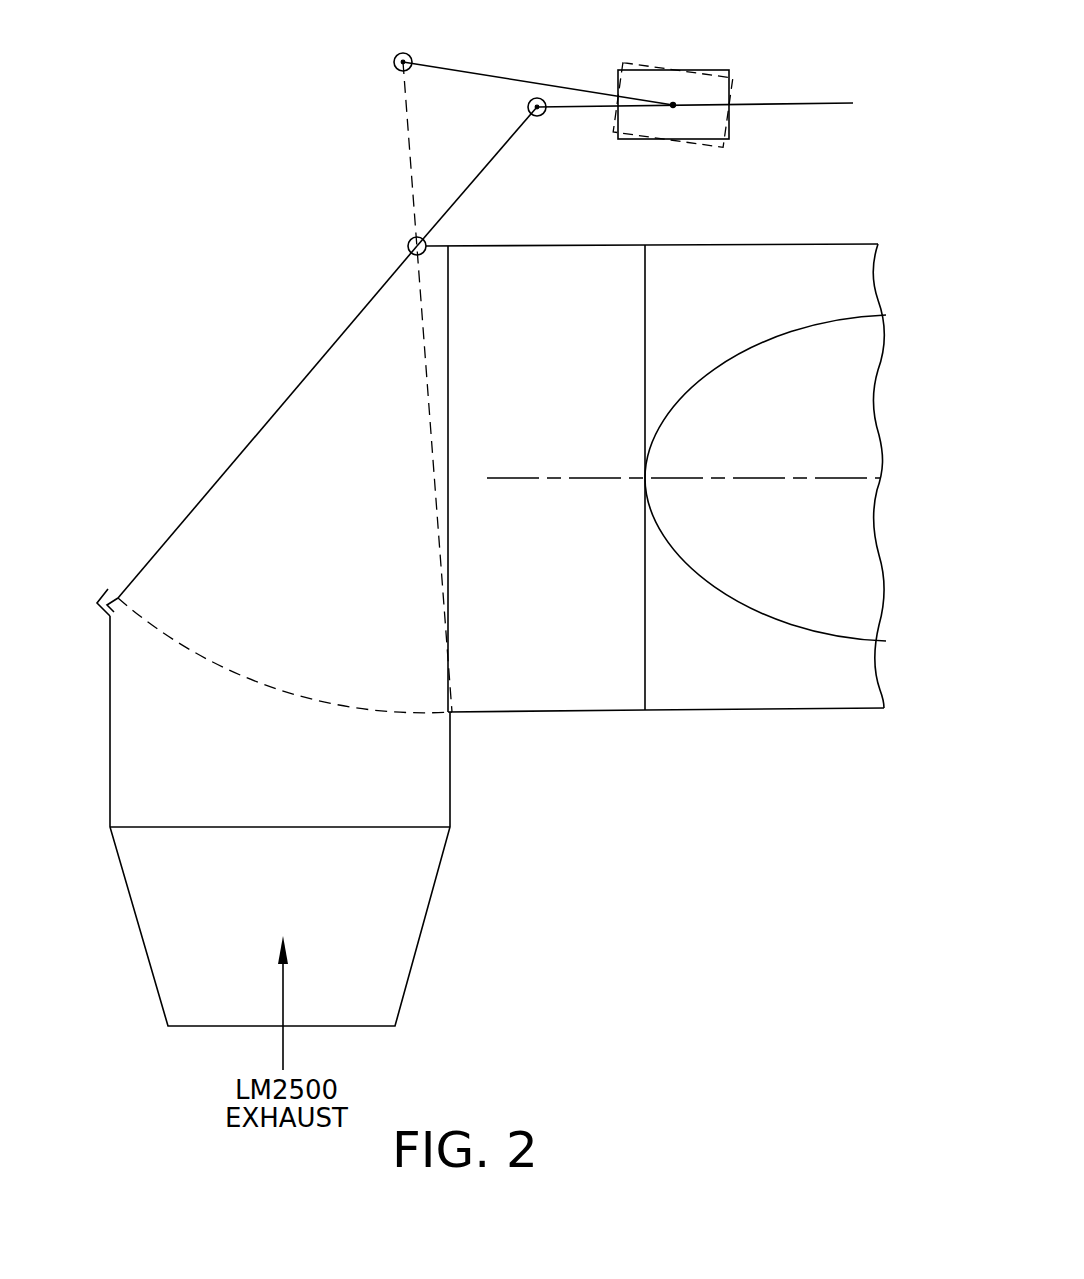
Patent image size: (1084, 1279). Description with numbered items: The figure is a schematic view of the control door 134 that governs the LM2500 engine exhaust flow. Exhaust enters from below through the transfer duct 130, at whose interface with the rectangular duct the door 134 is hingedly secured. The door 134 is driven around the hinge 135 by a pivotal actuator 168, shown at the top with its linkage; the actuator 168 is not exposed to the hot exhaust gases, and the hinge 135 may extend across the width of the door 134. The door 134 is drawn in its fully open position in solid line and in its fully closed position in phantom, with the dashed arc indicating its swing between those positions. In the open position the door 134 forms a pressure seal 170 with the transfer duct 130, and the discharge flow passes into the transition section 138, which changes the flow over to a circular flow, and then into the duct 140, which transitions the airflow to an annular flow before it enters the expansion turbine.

The transfer duct 130 is at (110, 805).
The control door 134 is at (427, 388).
The hinge 135 is at (407, 244).
The transition section 138 is at (527, 712).
The duct 140 is at (738, 711).
The pivotal actuator 168 is at (713, 70).
The pressure seal 170 is at (98, 600).